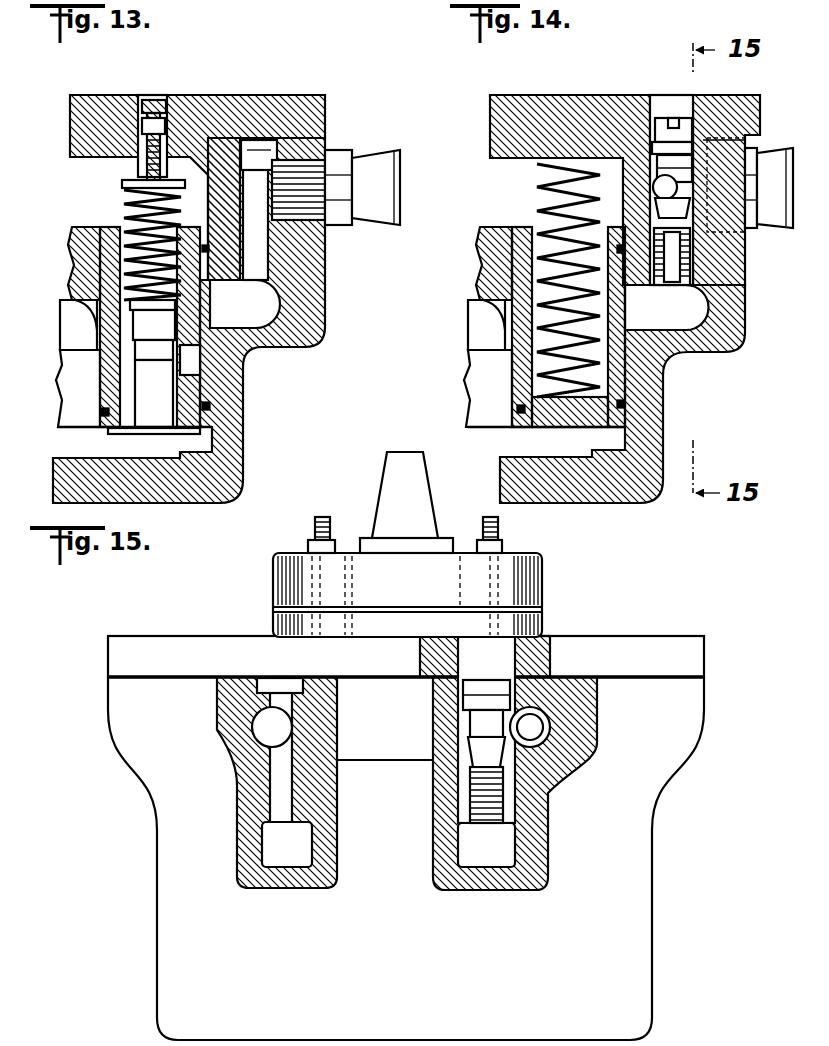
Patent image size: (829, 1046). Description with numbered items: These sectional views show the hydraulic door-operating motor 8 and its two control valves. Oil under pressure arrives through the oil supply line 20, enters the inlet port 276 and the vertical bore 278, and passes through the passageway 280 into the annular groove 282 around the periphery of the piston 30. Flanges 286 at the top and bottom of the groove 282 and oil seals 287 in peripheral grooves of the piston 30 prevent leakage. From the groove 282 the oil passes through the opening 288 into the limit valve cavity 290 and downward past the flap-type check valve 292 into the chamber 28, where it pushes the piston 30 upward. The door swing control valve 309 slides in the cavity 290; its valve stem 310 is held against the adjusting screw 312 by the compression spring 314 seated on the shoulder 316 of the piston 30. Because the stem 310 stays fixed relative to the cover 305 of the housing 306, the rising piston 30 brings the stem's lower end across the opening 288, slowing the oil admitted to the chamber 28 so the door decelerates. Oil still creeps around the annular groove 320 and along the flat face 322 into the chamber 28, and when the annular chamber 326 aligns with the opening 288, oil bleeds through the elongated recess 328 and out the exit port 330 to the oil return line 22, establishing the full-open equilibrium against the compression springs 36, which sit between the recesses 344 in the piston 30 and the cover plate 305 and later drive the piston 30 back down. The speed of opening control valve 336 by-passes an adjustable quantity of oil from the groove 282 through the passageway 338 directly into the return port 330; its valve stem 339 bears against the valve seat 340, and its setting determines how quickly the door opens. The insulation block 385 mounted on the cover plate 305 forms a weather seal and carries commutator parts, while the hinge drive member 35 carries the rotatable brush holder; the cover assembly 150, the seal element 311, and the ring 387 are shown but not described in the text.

In FIG. 15, the motor 8 is at (615, 582).
In FIG. 13, the oil supply line 20 is at (370, 160).
In FIG. 14, the oil return line 22 is at (775, 160).
In FIG. 13, the chamber 28 is at (62, 441).
In FIG. 13, the piston 30 is at (72, 252).
In FIG. 14, the piston 30 is at (482, 255).
In FIG. 13, the hinge drive member 35 is at (60, 330).
In FIG. 15, the hinge drive member 35 is at (392, 473).
In FIG. 14, the compression springs 36 is at (540, 190).
In FIG. 15, the cover 150 is at (287, 550).
In FIG. 13, the inlet port 276 is at (275, 222).
In FIG. 15, the inlet port 276 is at (254, 724).
In FIG. 13, the vertical bore 278 is at (262, 252).
In FIG. 15, the vertical bore 278 is at (280, 785).
In FIG. 13, the passageway 280 is at (265, 313).
In FIG. 15, the passageway 280 is at (272, 848).
In FIG. 13, the annular groove 282 is at (205, 362).
In FIG. 14, the annular groove 282 is at (618, 357).
In FIG. 13, the flanges 286 is at (203, 243).
In FIG. 13, the oil seals 287 is at (210, 405).
In FIG. 13, the opening 288 is at (186, 352).
In FIG. 13, the limit valve cavity 290 is at (146, 400).
In FIG. 13, the flap-type check valve 292 is at (143, 430).
In FIG. 13, the cover 305 is at (86, 118).
In FIG. 14, the cover 305 is at (506, 120).
In FIG. 15, the cover 305 is at (165, 640).
In FIG. 13, the housing 306 is at (228, 433).
In FIG. 14, the housing 306 is at (646, 410).
In FIG. 15, the housing 306 is at (160, 940).
In FIG. 13, the door swing control valve 309 is at (110, 178).
In FIG. 13, the valve stem 310 is at (140, 318).
In FIG. 13, the O-ring 311 is at (100, 412).
In FIG. 13, the adjusting screw 312 is at (165, 150).
In FIG. 13, the compression spring 314 is at (150, 210).
In FIG. 13, the shoulder 316 is at (132, 304).
In FIG. 13, the annular groove 320 is at (136, 343).
In FIG. 13, the flat face 322 is at (143, 360).
In FIG. 13, the annular groove or chamber 326 is at (186, 300).
In FIG. 13, the elongated recess 328 is at (147, 218).
In FIG. 14, the exit port 330 is at (716, 138).
In FIG. 15, the exit port 330 is at (544, 735).
In FIG. 14, the speed of opening control valve 336 is at (652, 130).
In FIG. 15, the speed of opening control valve 336 is at (506, 830).
In FIG. 14, the passageway 338 is at (695, 300).
In FIG. 15, the passageway 338 is at (478, 850).
In FIG. 14, the valve stem 339 is at (670, 183).
In FIG. 15, the valve stem 339 is at (480, 720).
In FIG. 14, the valve seat 340 is at (663, 212).
In FIG. 15, the valve seat 340 is at (470, 750).
In FIG. 14, the recesses 344 is at (540, 400).
In FIG. 15, the insulation block 385 is at (293, 620).
In FIG. 15, the ring 387 is at (292, 568).